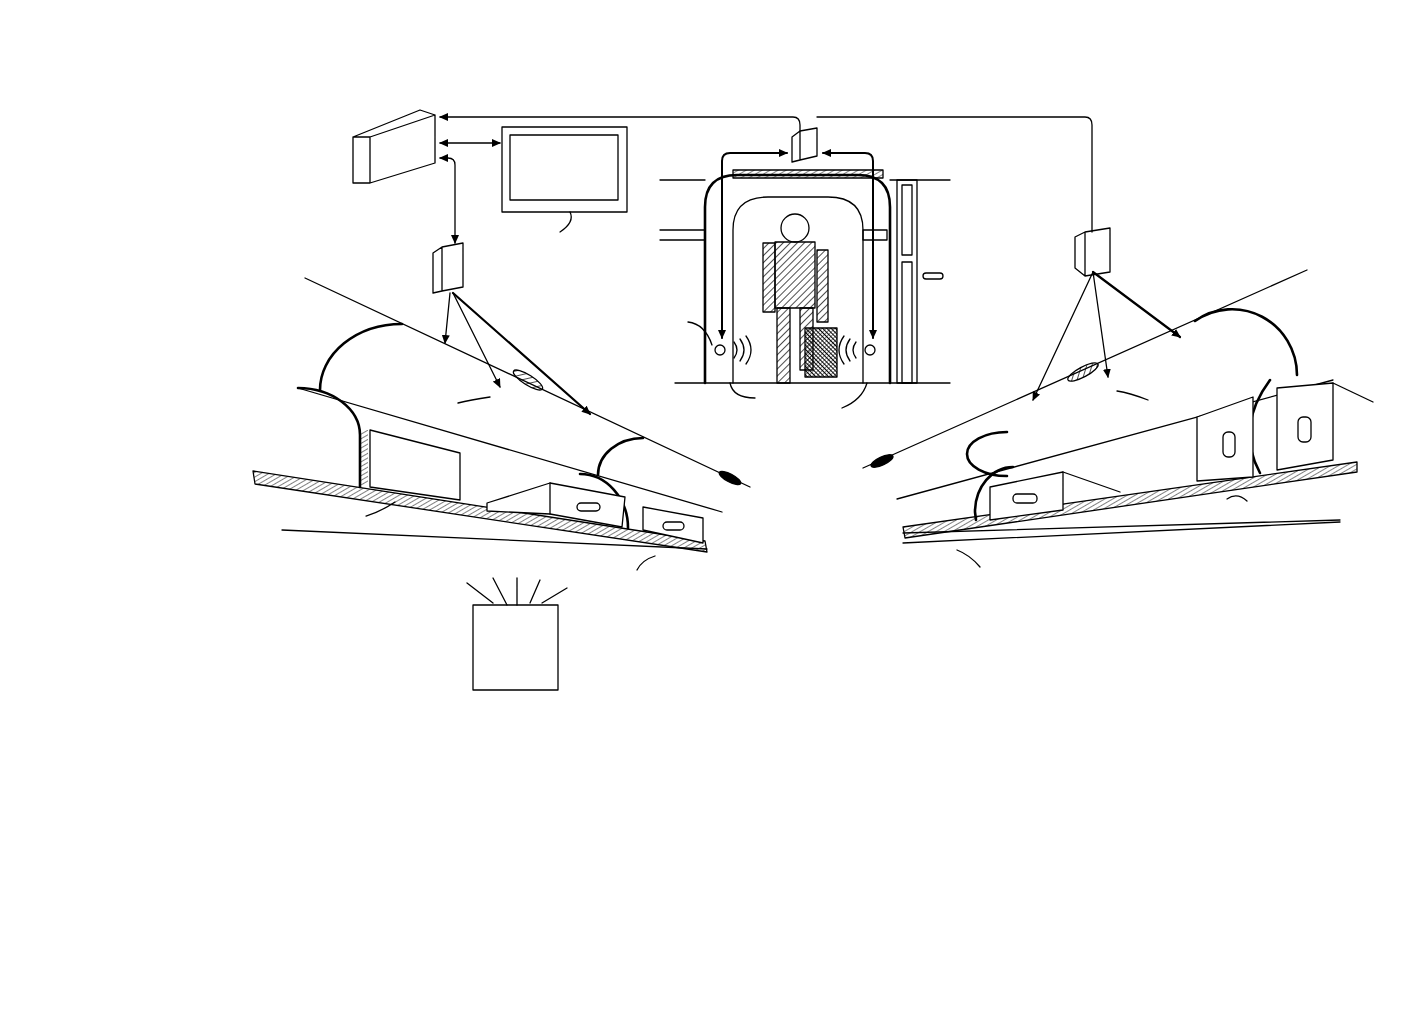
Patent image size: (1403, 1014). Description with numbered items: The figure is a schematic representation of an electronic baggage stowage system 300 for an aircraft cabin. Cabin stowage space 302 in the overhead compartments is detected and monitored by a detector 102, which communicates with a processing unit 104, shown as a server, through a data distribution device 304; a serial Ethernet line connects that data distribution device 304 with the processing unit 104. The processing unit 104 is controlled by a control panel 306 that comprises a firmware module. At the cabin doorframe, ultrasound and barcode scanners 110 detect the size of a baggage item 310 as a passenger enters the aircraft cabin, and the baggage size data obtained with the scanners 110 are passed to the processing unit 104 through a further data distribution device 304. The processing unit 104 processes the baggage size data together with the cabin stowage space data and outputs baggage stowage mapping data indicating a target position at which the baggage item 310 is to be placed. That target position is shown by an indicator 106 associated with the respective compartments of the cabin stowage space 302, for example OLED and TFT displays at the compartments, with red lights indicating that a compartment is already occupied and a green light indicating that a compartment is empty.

The electronic baggage stowage system 300 is at (383, 698).
The processing unit 104 is at (378, 110).
The control panel 306 is at (625, 152).
The data distribution device 304 is at (422, 267).
The baggage item 310 is at (833, 337).
The ultrasound and barcode scanners 110 is at (870, 346).
The cabin stowage space 302 is at (490, 488).
The indicator 106 is at (705, 549).
The detector 102 is at (517, 634).